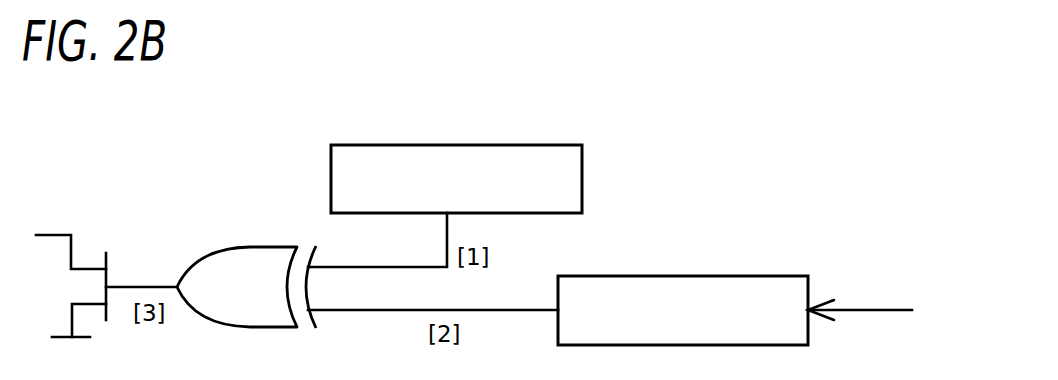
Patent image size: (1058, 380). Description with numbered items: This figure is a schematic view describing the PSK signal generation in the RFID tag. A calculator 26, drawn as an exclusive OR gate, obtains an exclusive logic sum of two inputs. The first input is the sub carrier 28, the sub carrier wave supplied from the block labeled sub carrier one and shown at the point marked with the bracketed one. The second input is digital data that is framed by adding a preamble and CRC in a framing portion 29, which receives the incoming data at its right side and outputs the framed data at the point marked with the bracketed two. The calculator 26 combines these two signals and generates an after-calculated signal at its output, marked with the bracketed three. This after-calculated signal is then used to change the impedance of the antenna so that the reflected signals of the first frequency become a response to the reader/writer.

The calculator 26 is at (266, 247).
The sub carrier 28 is at (543, 145).
The framing portion 29 is at (785, 276).